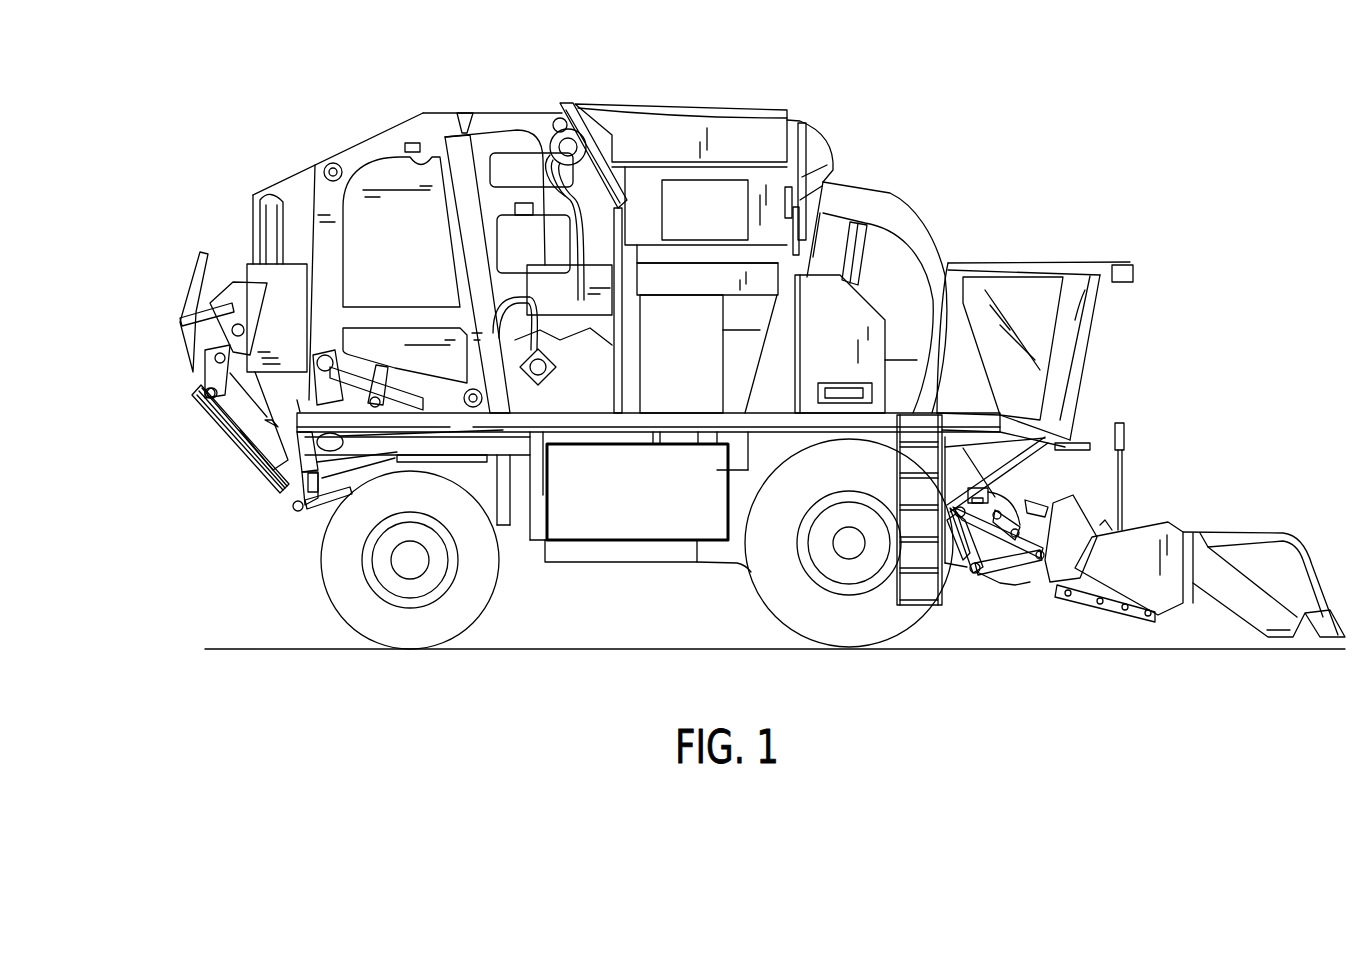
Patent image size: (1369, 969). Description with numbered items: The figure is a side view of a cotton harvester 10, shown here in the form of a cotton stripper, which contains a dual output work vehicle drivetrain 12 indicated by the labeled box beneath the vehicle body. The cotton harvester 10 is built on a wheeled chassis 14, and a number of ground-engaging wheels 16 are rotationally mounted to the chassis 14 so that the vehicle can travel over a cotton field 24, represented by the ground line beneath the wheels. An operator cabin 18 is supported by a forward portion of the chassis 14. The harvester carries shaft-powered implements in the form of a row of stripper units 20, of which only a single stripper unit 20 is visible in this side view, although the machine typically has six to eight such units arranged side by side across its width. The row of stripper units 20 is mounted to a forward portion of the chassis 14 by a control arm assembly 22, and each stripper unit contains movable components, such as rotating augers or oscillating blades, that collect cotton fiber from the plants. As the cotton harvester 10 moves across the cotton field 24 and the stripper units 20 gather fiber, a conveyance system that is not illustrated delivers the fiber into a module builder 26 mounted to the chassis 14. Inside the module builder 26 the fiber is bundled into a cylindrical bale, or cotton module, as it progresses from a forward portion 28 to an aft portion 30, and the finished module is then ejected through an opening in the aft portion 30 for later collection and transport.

The cotton harvester 10 is at (1035, 98).
The dual output work vehicle drivetrain 12 is at (653, 536).
The wheeled chassis 14 is at (660, 426).
The ground-engaging wheels 16 is at (333, 606).
The operator cabin 18 is at (1025, 272).
The stripper units 20 is at (1249, 547).
The control arm assembly 22 is at (1040, 500).
The cotton field 24 is at (568, 648).
The module builder 26 is at (420, 108).
The forward portion 28 is at (860, 197).
The aft portion 30 is at (268, 192).